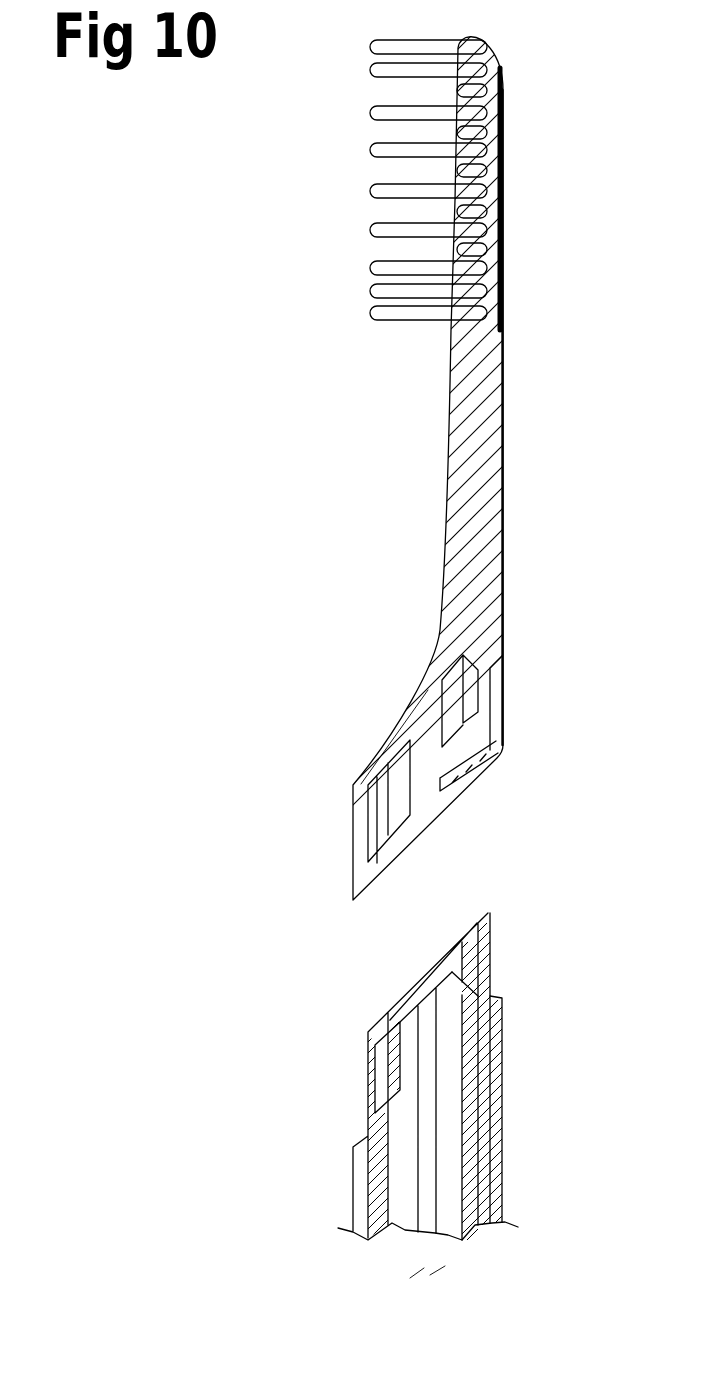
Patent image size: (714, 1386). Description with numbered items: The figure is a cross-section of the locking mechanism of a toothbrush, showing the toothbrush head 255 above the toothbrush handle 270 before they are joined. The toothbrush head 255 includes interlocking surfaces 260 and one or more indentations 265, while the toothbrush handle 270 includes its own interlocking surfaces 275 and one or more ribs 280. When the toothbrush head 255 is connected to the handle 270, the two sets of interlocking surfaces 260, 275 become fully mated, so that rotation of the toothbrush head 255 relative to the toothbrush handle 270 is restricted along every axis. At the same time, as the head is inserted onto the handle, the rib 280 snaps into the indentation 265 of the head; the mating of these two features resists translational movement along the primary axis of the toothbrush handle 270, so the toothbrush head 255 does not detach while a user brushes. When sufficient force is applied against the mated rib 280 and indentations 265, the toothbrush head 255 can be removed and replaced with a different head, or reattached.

The toothbrush head 255 is at (503, 382).
The interlocking surfaces 260 is at (482, 702).
The indentations 265 is at (463, 780).
The toothbrush handle 270 is at (502, 1134).
The interlocking surfaces 275 is at (490, 937).
The ribs 280 is at (496, 993).